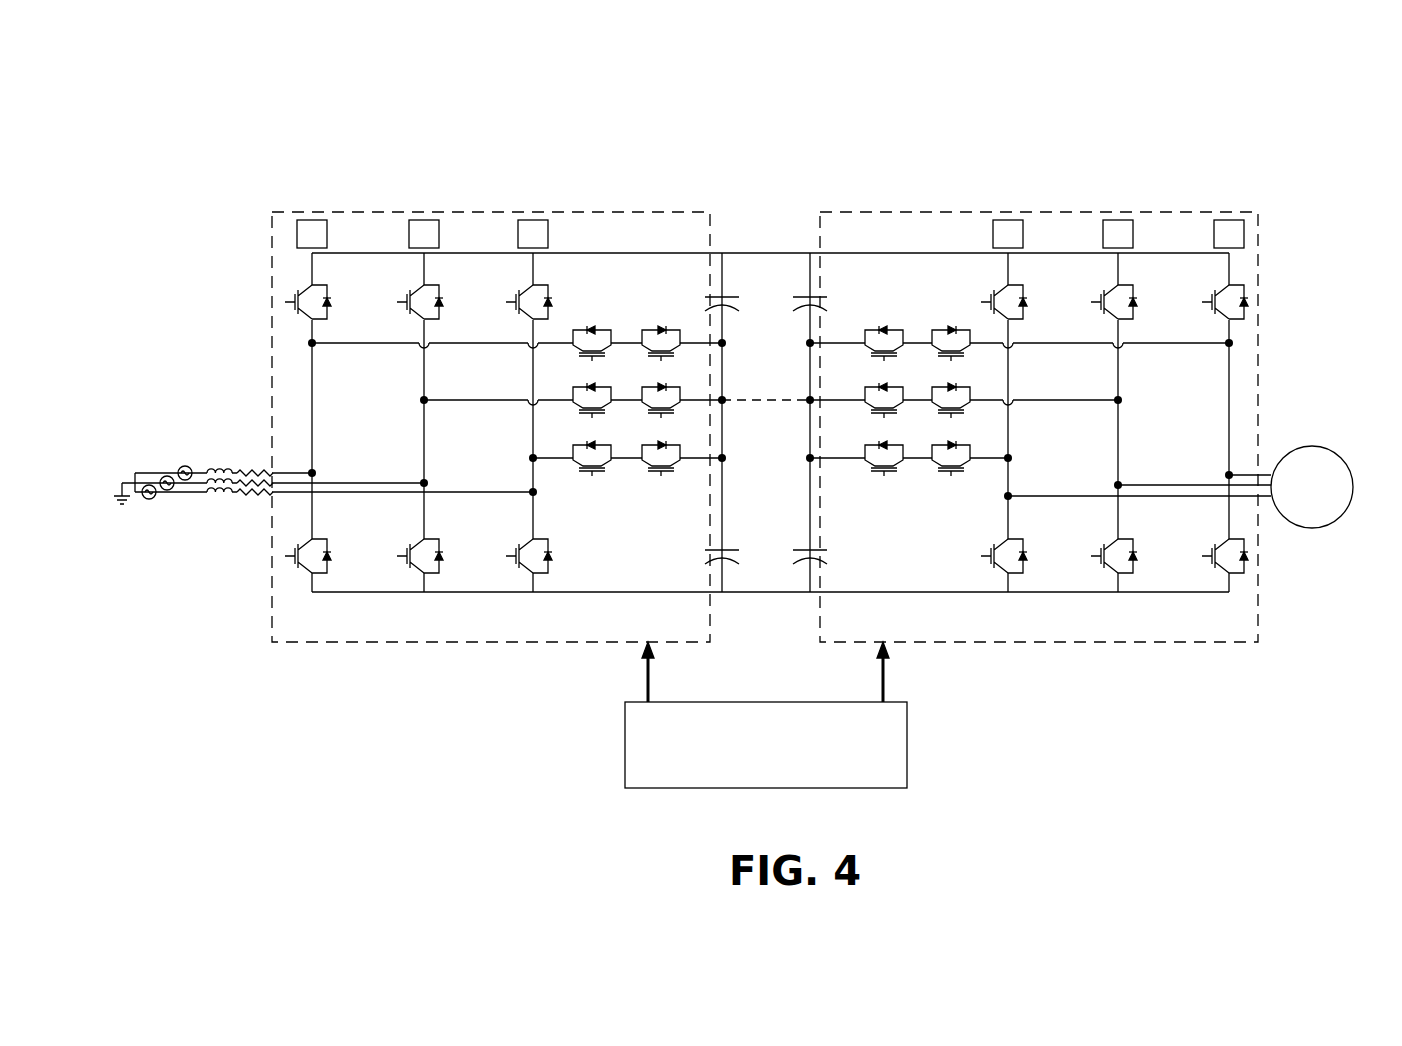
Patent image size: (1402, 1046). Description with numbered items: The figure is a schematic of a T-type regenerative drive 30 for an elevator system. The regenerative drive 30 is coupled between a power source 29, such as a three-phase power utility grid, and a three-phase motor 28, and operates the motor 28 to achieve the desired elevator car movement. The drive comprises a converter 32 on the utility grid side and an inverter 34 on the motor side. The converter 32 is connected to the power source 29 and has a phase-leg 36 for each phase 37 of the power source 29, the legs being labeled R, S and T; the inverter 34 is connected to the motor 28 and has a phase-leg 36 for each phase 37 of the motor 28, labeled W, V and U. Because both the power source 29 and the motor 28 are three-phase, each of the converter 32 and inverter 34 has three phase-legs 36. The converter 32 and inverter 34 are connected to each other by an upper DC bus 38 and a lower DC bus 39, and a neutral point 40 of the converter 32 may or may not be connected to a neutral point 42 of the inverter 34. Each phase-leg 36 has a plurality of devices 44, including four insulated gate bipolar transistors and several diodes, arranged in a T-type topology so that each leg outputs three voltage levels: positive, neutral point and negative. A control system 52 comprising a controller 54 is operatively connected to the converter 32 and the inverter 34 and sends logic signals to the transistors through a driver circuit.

The motor 28 is at (1318, 448).
The power source 29 is at (171, 460).
The regenerative drive 30 is at (1128, 104).
The converter 32 is at (272, 645).
The inverter 34 is at (1260, 642).
The phase-leg 36 is at (769, 364).
The phase 37 is at (703, 483).
The upper DC bus 38 is at (752, 253).
The lower DC bus 39 is at (752, 592).
The neutral point of the converter 40 is at (722, 400).
The neutral point of the inverter 42 is at (810, 400).
The devices 44 is at (768, 437).
The control system 52 is at (532, 727).
The controller 54 is at (908, 744).